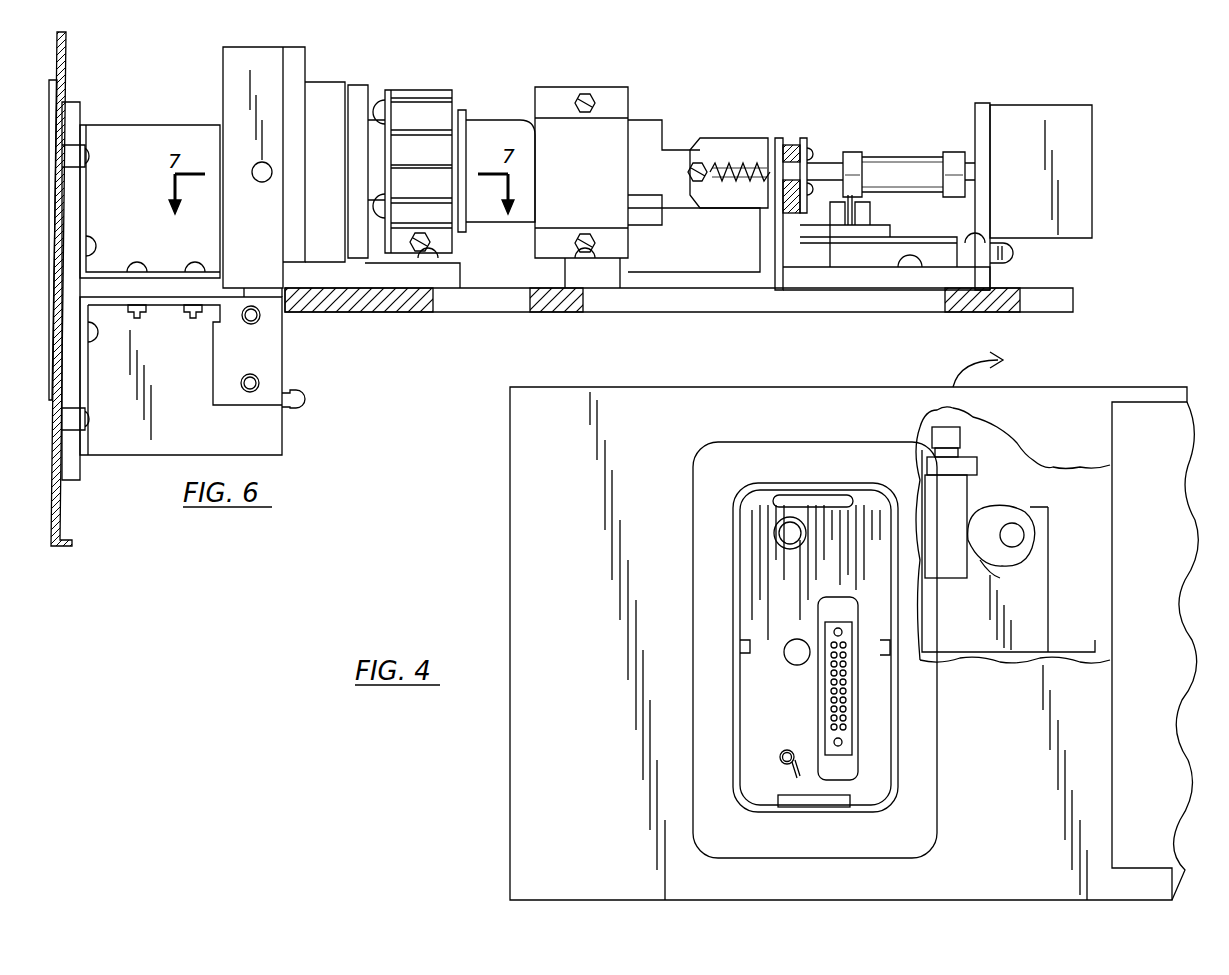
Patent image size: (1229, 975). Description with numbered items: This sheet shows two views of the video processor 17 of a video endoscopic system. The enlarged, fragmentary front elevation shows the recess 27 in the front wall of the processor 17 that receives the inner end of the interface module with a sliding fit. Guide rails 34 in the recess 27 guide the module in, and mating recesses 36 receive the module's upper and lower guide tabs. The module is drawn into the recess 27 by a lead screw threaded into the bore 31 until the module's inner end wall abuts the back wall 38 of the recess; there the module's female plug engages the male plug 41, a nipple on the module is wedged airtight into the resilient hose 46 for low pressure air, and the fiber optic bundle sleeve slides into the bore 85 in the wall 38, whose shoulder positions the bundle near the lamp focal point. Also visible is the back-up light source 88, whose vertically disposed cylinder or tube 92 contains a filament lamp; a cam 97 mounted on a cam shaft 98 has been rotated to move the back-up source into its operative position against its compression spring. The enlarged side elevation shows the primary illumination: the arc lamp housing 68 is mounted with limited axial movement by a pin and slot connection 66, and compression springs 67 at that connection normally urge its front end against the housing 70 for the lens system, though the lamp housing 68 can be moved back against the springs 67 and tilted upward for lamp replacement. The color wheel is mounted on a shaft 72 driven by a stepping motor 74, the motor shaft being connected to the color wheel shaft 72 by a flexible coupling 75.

In FIG. 4, the video processor 17 is at (532, 620).
In FIG. 4, the recess 27 is at (745, 720).
In FIG. 4, the bore 31 is at (790, 660).
In FIG. 4, the guide rails 34 is at (745, 650).
In FIG. 4, the recesses 36 is at (840, 503).
In FIG. 4, the back wall 38 is at (890, 567).
In FIG. 4, the male plug 41 is at (848, 712).
In FIG. 4, the resilient hose 46 is at (780, 756).
In FIG. 6, the pin and slot connection 66 is at (722, 192).
In FIG. 6, the compression springs 67 is at (748, 152).
In FIG. 6, the lamp housing 68 is at (423, 97).
In FIG. 6, the housing for the lens system 70 is at (335, 86).
In FIG. 6, the shaft 72 is at (828, 163).
In FIG. 6, the stepping motor 74 is at (1085, 170).
In FIG. 6, the flexible coupling 75 is at (905, 168).
In FIG. 4, the bore 85 is at (795, 548).
In FIG. 4, the back-up light source 88 is at (986, 457).
In FIG. 4, the vertically disposed cylinder or tube 92 is at (960, 492).
In FIG. 4, the cam 97 is at (988, 560).
In FIG. 4, the cam shaft 98 is at (1028, 537).